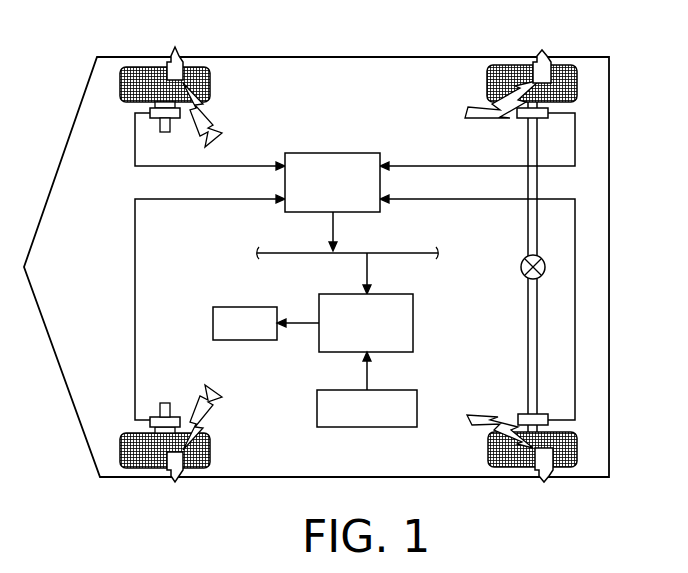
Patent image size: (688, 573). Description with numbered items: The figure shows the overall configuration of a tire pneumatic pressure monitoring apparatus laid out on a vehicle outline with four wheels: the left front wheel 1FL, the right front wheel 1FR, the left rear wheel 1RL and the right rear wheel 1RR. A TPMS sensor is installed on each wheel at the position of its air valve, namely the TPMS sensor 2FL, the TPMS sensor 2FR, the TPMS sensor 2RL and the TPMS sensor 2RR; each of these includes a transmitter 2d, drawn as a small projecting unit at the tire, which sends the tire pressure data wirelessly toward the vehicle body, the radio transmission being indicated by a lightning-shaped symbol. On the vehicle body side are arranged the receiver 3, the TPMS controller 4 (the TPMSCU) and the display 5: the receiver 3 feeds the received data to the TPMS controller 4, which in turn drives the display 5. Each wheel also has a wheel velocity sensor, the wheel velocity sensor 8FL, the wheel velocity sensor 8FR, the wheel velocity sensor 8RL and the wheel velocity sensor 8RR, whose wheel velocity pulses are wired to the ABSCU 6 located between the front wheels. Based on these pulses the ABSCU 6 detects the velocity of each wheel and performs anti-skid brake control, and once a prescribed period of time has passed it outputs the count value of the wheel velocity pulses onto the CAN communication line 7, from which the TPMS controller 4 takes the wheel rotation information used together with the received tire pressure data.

The right front wheel 1FR is at (128, 67).
The right rear wheel 1RR is at (508, 65).
The left front wheel 1FL is at (128, 468).
The left rear wheel 1RL is at (508, 467).
The TPMS sensor of the right front wheel 2FR is at (195, 70).
The TPMS sensor of the right rear wheel 2RR is at (553, 75).
The TPMS sensor of the left front wheel 2FL is at (198, 458).
The TPMS sensor of the left rear wheel 2RL is at (555, 457).
The transmitter 2d is at (173, 53).
The wheel velocity sensor of the right front wheel 8FR is at (156, 100).
The wheel velocity sensor of the right rear wheel 8RR is at (520, 119).
The wheel velocity sensor of the left front wheel 8FL is at (156, 433).
The wheel velocity sensor of the left rear wheel 8RL is at (522, 413).
The ABSCU 6 is at (355, 153).
The CAN communication line 7 is at (402, 250).
The display 5 is at (233, 307).
The TPMS controller 4 is at (415, 325).
The receiver 3 is at (317, 410).